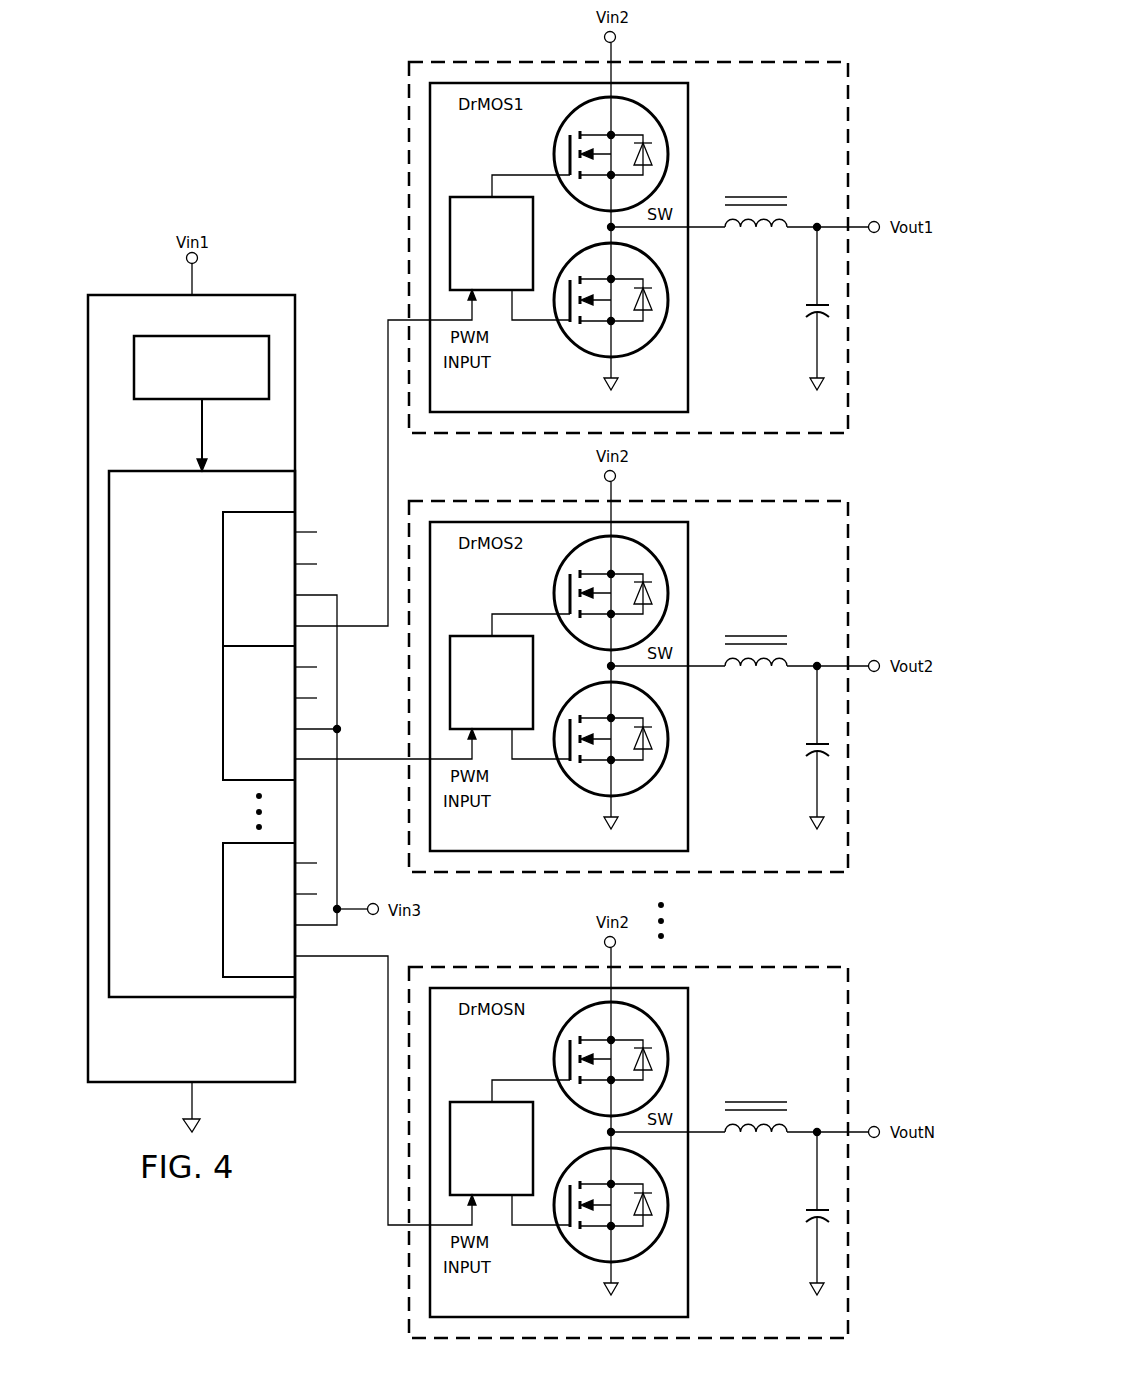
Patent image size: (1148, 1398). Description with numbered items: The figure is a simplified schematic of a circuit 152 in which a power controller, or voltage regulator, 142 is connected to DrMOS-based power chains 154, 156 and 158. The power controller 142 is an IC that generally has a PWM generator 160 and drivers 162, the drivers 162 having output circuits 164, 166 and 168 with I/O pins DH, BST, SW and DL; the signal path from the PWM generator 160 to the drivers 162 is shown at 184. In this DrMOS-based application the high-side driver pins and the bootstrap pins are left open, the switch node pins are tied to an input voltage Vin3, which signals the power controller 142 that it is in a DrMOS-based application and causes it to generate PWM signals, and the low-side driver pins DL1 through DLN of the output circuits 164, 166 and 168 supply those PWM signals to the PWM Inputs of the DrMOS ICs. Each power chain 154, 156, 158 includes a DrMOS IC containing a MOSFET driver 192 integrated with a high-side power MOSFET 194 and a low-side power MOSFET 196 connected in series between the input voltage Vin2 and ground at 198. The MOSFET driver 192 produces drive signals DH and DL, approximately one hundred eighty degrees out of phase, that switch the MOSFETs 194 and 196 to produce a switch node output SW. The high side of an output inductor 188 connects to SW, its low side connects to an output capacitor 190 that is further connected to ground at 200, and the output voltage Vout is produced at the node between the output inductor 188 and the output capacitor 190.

The power controller 142 is at (138, 291).
The circuit 152 is at (242, 168).
The DrMOS-based power chain 154 is at (856, 158).
The DrMOS-based power chain 156 is at (856, 597).
The DrMOS-based power chain 158 is at (856, 1218).
The PWM generator 160 is at (170, 402).
The drivers 162 is at (200, 1006).
The output circuit 164 is at (222, 578).
The output circuit 166 is at (222, 714).
The output circuit 168 is at (226, 910).
The PWM signal 184 is at (205, 434).
The output inductor 188 is at (757, 195).
The output capacitor 190 is at (805, 311).
The MOSFET driver 192 is at (477, 197).
The high-side power MOSFET 194 is at (554, 152).
The low-side power MOSFET 196 is at (567, 342).
The ground 198 is at (605, 382).
The ground 200 is at (809, 385).